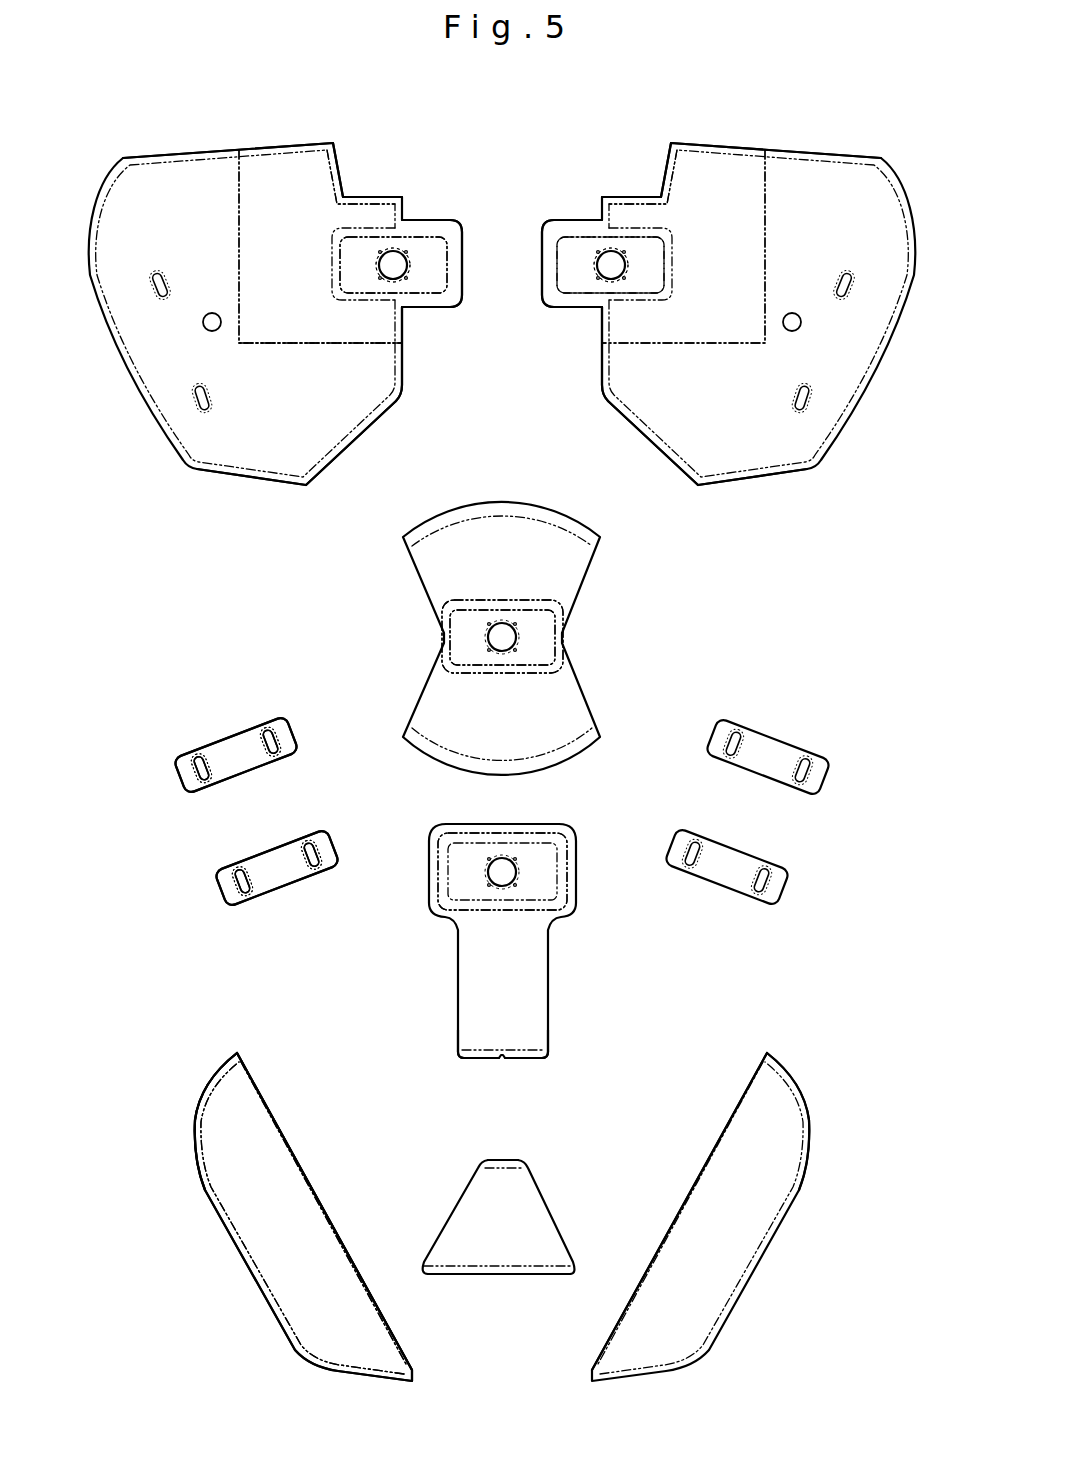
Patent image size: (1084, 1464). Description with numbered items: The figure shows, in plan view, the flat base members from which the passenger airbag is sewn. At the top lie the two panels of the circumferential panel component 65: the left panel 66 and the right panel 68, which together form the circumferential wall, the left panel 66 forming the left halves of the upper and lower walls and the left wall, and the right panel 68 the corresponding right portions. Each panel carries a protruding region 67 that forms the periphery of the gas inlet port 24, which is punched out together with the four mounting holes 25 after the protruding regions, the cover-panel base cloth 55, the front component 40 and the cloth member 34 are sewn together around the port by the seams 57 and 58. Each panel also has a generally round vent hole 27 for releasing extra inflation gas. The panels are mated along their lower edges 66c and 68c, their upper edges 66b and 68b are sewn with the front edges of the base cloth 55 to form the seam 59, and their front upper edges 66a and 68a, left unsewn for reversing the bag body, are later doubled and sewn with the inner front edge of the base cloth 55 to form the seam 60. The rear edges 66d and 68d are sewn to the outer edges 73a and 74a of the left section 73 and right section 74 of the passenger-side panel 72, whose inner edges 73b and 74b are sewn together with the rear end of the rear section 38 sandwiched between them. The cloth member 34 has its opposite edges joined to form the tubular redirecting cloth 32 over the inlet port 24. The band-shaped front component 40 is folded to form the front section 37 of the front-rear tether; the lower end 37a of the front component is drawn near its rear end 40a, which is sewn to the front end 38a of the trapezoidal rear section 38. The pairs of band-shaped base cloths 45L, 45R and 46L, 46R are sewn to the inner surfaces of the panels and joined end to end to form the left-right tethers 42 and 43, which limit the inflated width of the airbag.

The gas inlet port 24 is at (379, 265).
The mounting holes 25 is at (380, 278).
The vent hole 27 is at (216, 331).
The redirecting cloth 32 is at (502, 637).
The cloth member 34 is at (599, 664).
The front section 37 is at (502, 871).
The lower end of lower support member 37a is at (480, 1059).
The rear section 38 is at (559, 1184).
The front end of rear section 38a is at (500, 1160).
The front component 40 is at (582, 981).
The rear end of front component 40a is at (525, 1059).
The left-right tether 42 is at (236, 755).
The left-right tether 43 is at (277, 868).
The base cloth 45R is at (241, 710).
The base cloth 45L is at (762, 710).
The base cloth 46R is at (238, 846).
The base cloth 46L is at (766, 846).
The base cloth 55 is at (313, 330).
The seam 57 is at (386, 300).
The seam 58 is at (422, 308).
The seam 59 is at (182, 162).
The seam 60 is at (327, 170).
The circumferential panel component 65 is at (501, 619).
The left panel 66 is at (584, 409).
The front upper edge of left panel 66a is at (634, 194).
The upper edge of left panel 66b is at (785, 151).
The lower edge of left panel 66c is at (662, 450).
The rear edge of left panel 66d is at (777, 470).
The protruding region 67 is at (428, 242).
The right panel 68 is at (553, 437).
The front upper edge of right panel 68a is at (370, 194).
The upper edge of right panel 68b is at (205, 150).
The lower edge of right panel 68c is at (340, 450).
The rear edge of right panel 68d is at (227, 470).
The passenger-side panel 72 is at (303, 1217).
The left section 73 is at (807, 1058).
The outer edge of left section 73a is at (807, 1180).
The inner edge of left section 73b is at (672, 1212).
The right section 74 is at (192, 1057).
The outer edge of right section 74a is at (197, 1180).
The inner edge of right section 74b is at (330, 1212).